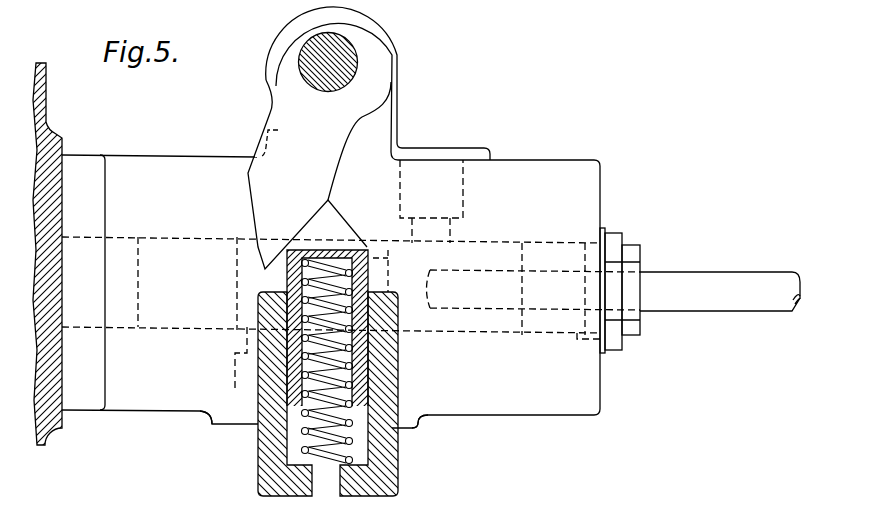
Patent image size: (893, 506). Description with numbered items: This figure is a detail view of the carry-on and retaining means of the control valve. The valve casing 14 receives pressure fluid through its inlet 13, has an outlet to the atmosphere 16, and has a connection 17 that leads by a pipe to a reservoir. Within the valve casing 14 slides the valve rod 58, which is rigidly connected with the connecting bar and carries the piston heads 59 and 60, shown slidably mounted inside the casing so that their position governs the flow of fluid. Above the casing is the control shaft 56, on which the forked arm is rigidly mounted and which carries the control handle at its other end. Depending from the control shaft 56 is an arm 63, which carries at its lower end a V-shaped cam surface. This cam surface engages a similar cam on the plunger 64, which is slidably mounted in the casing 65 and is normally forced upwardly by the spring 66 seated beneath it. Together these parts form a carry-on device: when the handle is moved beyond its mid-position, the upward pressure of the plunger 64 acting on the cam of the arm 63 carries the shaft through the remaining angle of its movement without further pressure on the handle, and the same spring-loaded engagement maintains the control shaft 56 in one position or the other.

The inlet 13 is at (466, 154).
The valve casing 14 is at (600, 164).
The outlet to the atmosphere 16 is at (235, 392).
The connection 17 is at (398, 386).
The control shaft 56 is at (360, 56).
The valve rod 58 is at (711, 276).
The piston head 59 is at (503, 252).
The piston head 60 is at (168, 235).
The arm 63 is at (265, 128).
The plunger 64 is at (351, 248).
The casing 65 is at (258, 462).
The spring 66 is at (312, 464).